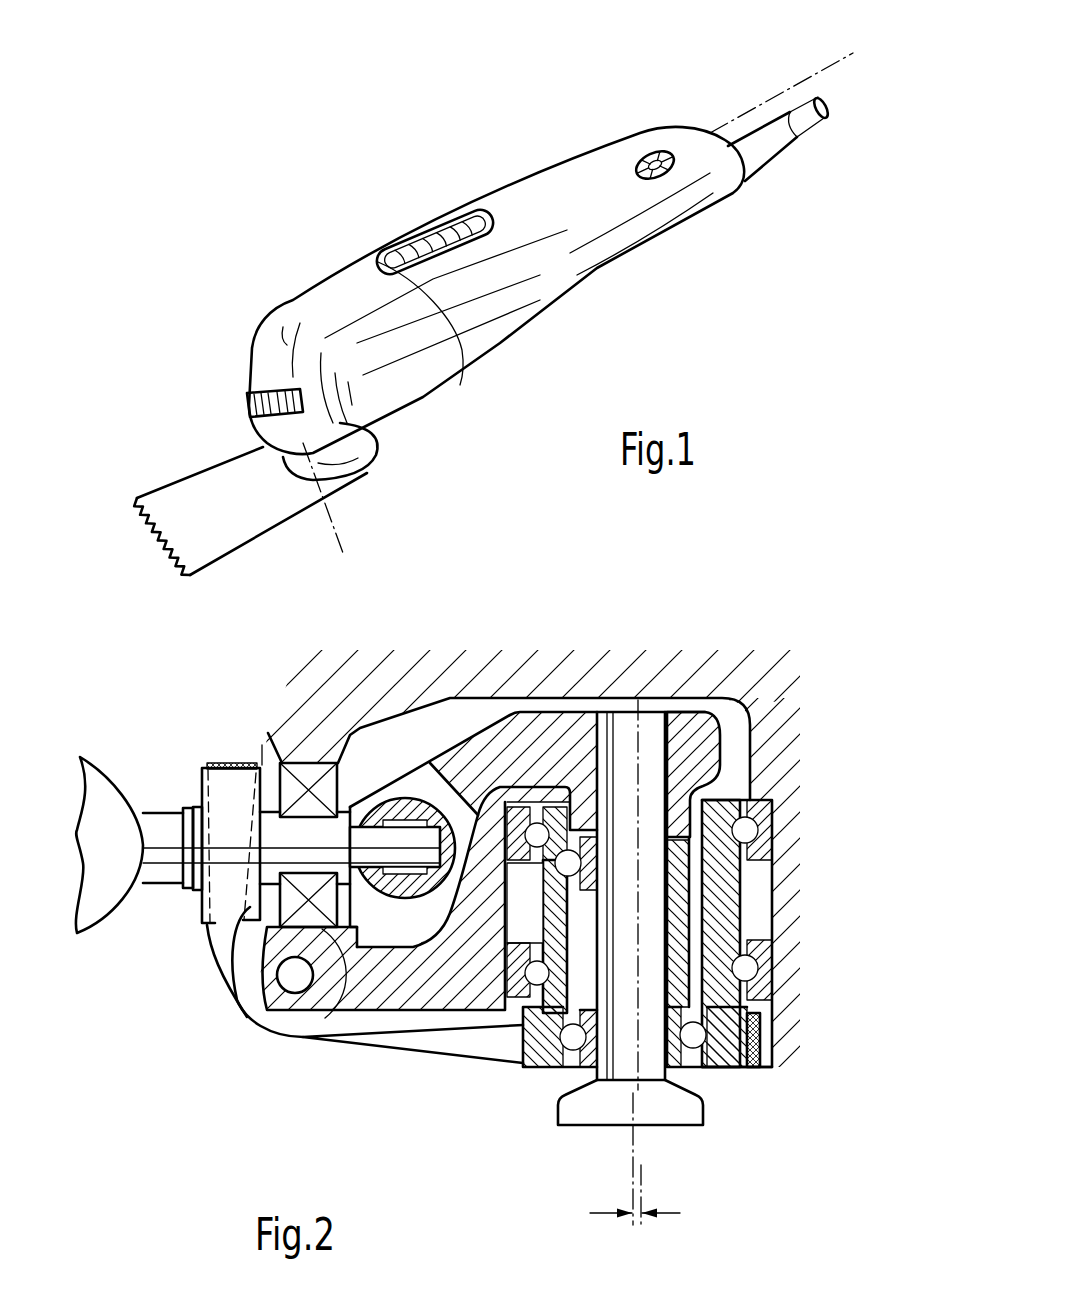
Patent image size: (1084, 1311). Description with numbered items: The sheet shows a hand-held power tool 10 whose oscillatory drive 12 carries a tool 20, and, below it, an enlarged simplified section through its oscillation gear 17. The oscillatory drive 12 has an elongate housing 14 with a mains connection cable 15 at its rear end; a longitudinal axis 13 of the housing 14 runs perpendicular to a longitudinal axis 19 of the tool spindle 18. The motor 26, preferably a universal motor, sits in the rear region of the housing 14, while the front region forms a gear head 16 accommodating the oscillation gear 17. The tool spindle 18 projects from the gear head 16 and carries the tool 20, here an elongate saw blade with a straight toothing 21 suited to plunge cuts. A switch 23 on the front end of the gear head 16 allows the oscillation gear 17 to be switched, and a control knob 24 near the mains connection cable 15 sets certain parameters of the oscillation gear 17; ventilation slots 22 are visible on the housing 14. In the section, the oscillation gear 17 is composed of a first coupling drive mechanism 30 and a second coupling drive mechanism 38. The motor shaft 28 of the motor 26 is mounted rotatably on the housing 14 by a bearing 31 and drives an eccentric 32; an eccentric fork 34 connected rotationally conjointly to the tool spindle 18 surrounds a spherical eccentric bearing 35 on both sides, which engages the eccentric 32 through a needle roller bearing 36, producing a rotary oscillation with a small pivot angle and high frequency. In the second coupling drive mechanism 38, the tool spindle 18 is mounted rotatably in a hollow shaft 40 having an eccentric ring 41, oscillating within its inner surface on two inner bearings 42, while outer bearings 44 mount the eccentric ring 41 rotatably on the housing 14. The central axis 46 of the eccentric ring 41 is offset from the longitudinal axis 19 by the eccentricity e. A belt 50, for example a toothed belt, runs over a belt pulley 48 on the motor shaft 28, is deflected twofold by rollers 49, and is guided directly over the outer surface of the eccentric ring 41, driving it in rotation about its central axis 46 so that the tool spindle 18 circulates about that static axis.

In FIG. 1, the power tool 10 is at (220, 198).
In FIG. 1, the oscillatory drive 12 is at (398, 226).
In FIG. 1, the longitudinal axis of the housing 13 is at (757, 83).
In FIG. 1, the housing 14 is at (582, 289).
In FIG. 2, the housing 14 is at (717, 675).
In FIG. 1, the mains connection cable 15 is at (803, 117).
In FIG. 1, the gear head 16 is at (333, 283).
In FIG. 1, the oscillation gear 17 is at (357, 308).
In FIG. 2, the oscillation gear 17 is at (679, 616).
In FIG. 1, the tool spindle 18 is at (353, 467).
In FIG. 2, the tool spindle 18 is at (653, 1053).
In FIG. 1, the longitudinal axis of the tool spindle 19 is at (337, 533).
In FIG. 2, the longitudinal axis of the tool spindle 19 is at (630, 1143).
In FIG. 1, the tool 20 is at (217, 483).
In FIG. 1, the straight toothing 21 is at (153, 527).
In FIG. 1, the ventilation slots 22 is at (460, 232).
In FIG. 1, the switch 23 is at (273, 397).
In FIG. 1, the control knob 24 is at (658, 150).
In FIG. 1, the motor 26 is at (582, 217).
In FIG. 2, the motor 26 is at (110, 787).
In FIG. 2, the motor shaft 28 is at (160, 822).
In FIG. 2, the first coupling drive mechanism 30 is at (428, 730).
In FIG. 2, the bearing 31 is at (310, 740).
In FIG. 2, the eccentric 32 is at (363, 843).
In FIG. 2, the eccentric fork 34 is at (515, 733).
In FIG. 2, the eccentric bearing 35 is at (403, 797).
In FIG. 2, the needle roller bearing 36 is at (397, 873).
In FIG. 2, the second coupling drive mechanism 38 is at (508, 1065).
In FIG. 2, the hollow shaft 40 is at (752, 910).
In FIG. 2, the eccentric ring 41 is at (720, 897).
In FIG. 2, the inner bearings 42 is at (705, 1040).
In FIG. 2, the outer bearings 44 is at (750, 967).
In FIG. 2, the central axis 46 is at (641, 1168).
In FIG. 2, the belt pulley 48 is at (200, 905).
In FIG. 2, the rollers 49 is at (250, 1017).
In FIG. 2, the belt 50 is at (227, 763).